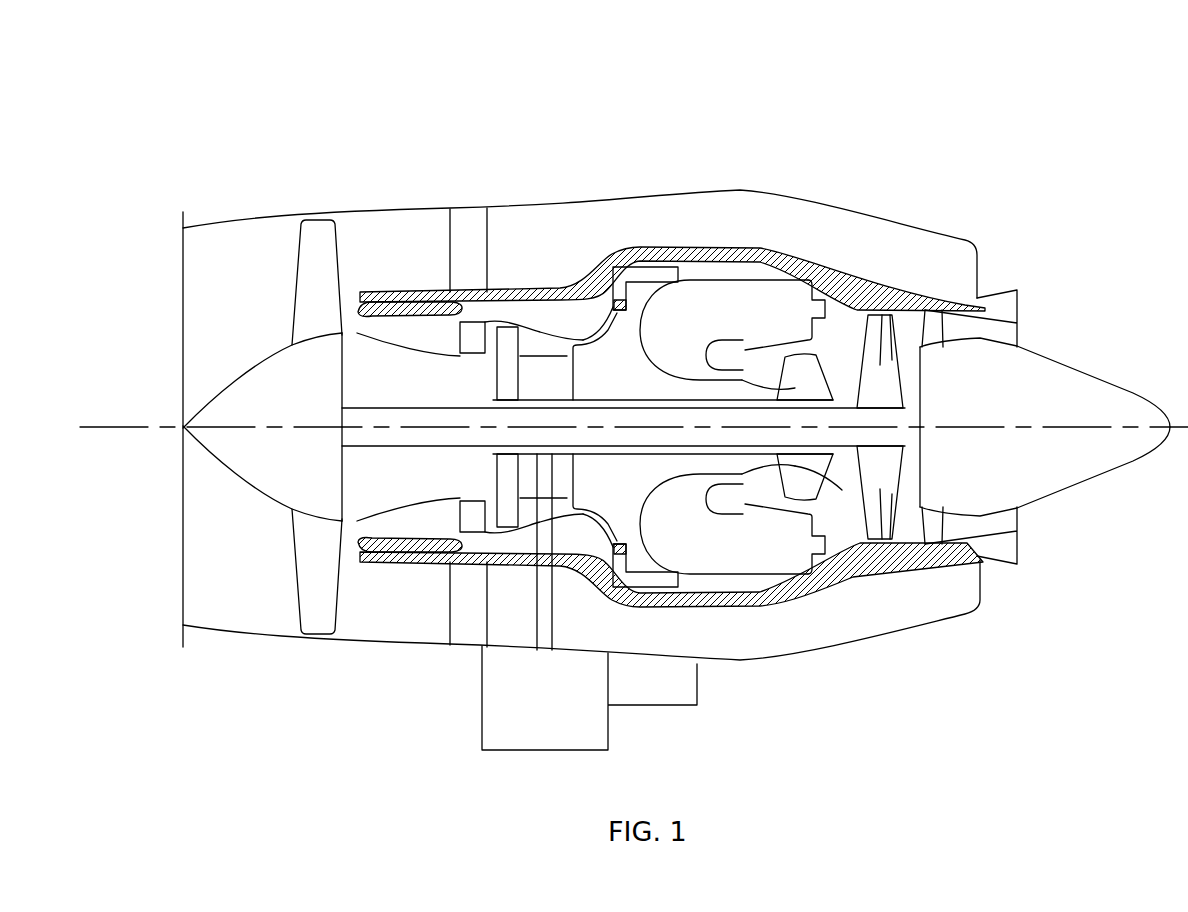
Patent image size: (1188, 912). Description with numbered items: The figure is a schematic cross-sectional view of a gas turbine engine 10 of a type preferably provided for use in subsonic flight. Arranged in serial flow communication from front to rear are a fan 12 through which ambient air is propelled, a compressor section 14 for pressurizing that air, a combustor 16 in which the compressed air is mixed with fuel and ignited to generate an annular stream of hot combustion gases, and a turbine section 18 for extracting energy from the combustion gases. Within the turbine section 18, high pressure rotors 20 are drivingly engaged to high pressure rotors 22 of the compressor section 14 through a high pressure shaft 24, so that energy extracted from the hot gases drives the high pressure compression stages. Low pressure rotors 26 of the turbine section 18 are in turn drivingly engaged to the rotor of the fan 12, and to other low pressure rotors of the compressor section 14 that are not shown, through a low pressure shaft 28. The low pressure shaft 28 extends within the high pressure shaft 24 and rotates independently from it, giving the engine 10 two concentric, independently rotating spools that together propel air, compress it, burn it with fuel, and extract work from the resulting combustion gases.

The gas turbine engine 10 is at (866, 126).
The fan 12 is at (313, 562).
The compressor section 14 is at (535, 340).
The high pressure rotor of the compressor section 22 is at (598, 360).
The combustor 16 is at (727, 303).
The high pressure shaft 24 is at (730, 370).
The high pressure rotor of the turbine section 20 is at (813, 360).
The low pressure rotor of the turbine section 26 is at (823, 360).
The turbine section 18 is at (842, 490).
The low pressure shaft 28 is at (400, 446).